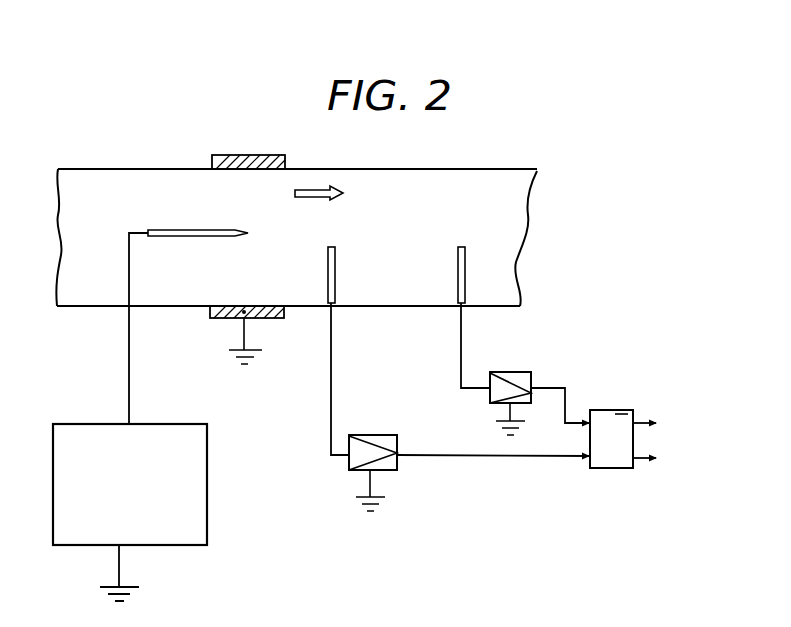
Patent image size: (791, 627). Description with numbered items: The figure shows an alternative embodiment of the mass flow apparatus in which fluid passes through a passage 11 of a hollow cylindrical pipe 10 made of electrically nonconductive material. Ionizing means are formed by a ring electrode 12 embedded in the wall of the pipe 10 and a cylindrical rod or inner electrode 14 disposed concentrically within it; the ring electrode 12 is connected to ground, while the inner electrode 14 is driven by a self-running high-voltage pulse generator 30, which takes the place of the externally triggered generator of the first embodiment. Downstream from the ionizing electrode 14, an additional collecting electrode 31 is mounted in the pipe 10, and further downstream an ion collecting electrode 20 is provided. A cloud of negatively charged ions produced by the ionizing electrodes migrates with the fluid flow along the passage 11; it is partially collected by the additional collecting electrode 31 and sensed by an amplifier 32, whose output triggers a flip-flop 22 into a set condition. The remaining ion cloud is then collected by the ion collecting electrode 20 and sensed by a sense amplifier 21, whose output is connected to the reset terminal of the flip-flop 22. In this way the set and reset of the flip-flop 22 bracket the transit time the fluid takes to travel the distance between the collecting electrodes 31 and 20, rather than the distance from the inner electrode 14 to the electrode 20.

The pipe 10 is at (183, 150).
The passage 11 is at (378, 210).
The ring electrode 12 is at (262, 155).
The inner electrode 14 is at (173, 232).
The ion collecting electrode 20 is at (462, 247).
The sense amplifier 21 is at (517, 373).
The flip-flop 22 is at (610, 413).
The self-running high-voltage pulse generator 30 is at (200, 491).
The additional collecting electrode 31 is at (333, 247).
The amplifier 32 is at (377, 435).